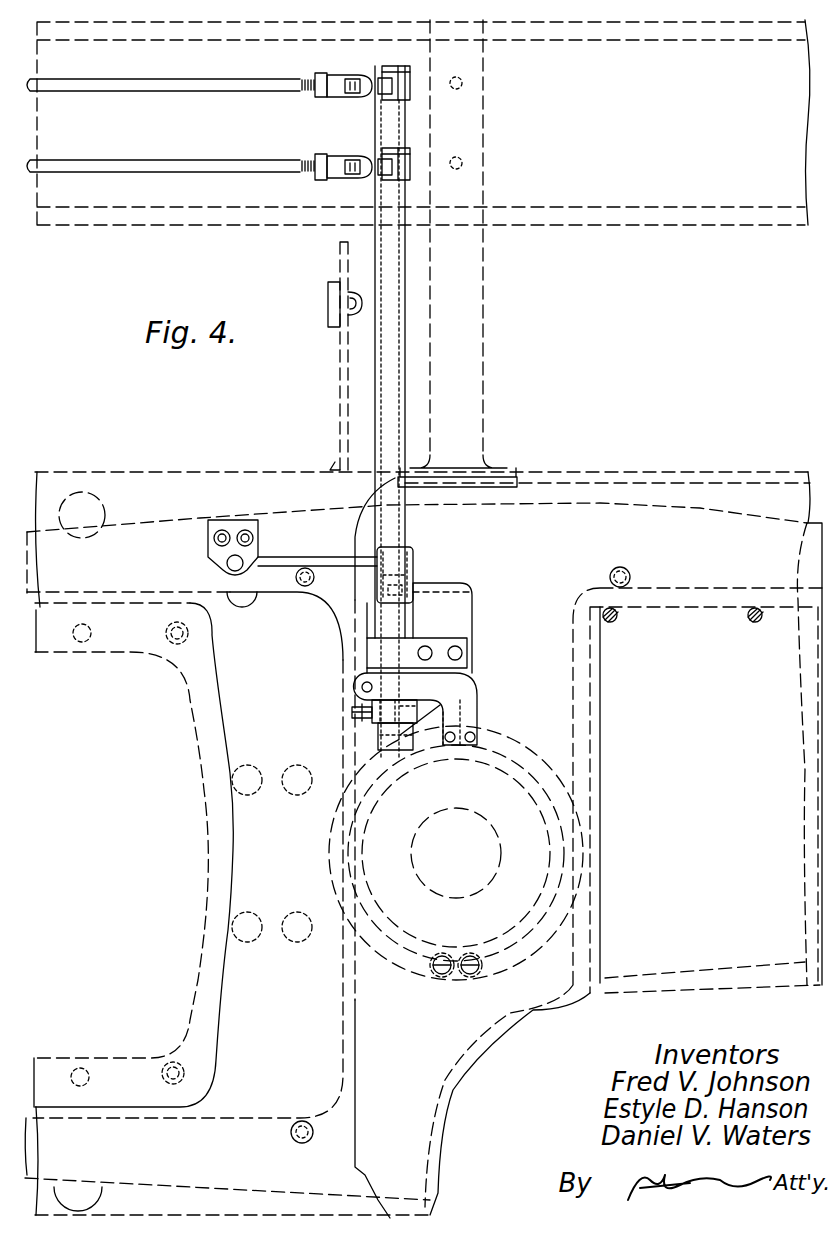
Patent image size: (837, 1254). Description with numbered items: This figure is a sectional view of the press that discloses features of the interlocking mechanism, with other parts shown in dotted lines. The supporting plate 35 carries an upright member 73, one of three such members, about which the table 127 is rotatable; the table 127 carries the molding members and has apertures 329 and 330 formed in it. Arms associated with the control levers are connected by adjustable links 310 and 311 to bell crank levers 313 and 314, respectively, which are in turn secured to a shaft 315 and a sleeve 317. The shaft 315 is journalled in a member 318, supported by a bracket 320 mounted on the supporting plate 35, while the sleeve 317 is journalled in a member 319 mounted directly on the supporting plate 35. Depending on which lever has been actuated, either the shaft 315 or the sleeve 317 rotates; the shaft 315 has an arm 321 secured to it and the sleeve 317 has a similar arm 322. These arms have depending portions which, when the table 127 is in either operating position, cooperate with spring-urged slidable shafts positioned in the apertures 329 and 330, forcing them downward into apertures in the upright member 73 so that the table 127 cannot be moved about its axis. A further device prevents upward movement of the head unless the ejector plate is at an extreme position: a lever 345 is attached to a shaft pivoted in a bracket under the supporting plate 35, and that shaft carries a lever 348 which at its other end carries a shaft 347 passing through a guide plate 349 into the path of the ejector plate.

The supporting plate 35 is at (148, 475).
The upright member 73 is at (482, 850).
The table 127 is at (242, 830).
The adjustable link 310 is at (162, 162).
The adjustable link 311 is at (172, 84).
The bell crank lever 313 is at (388, 167).
The bell crank lever 314 is at (383, 87).
The shaft 315 is at (400, 347).
The sleeve 317 is at (395, 313).
The member 318 is at (415, 128).
The member 319 is at (433, 642).
The bracket 320 is at (470, 168).
The arm 321 is at (425, 712).
The arm 322 is at (473, 712).
The aperture 329 is at (470, 978).
The aperture 330 is at (445, 975).
The lever 345 is at (432, 735).
The shaft 347 is at (228, 563).
The lever 348 is at (288, 566).
The guide plate 349 is at (215, 538).